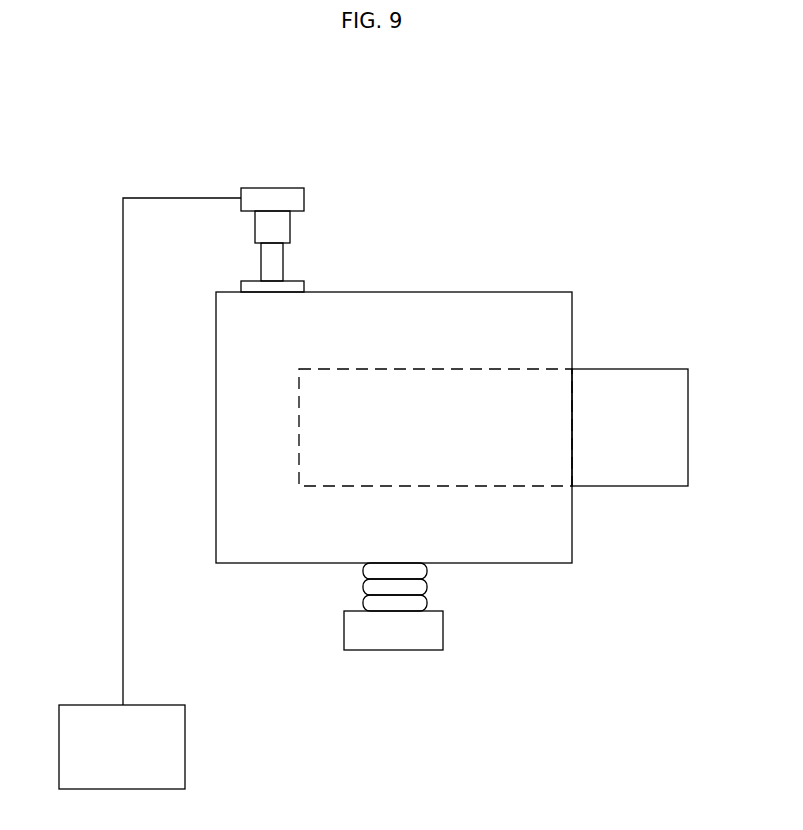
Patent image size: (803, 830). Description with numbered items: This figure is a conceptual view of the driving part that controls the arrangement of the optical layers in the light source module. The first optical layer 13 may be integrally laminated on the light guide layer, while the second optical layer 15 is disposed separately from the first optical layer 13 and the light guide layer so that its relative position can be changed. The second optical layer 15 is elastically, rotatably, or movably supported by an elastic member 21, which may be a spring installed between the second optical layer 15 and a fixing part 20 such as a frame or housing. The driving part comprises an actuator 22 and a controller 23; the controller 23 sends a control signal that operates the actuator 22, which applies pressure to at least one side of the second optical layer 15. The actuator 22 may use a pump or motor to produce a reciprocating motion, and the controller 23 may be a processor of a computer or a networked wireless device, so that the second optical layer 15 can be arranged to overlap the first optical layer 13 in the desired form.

The first optical layer 13 is at (629, 369).
The second optical layer 15 is at (393, 292).
The fixing part 20 is at (443, 628).
The elastic member 21 is at (427, 585).
The actuator 22 is at (272, 188).
The controller 23 is at (185, 748).